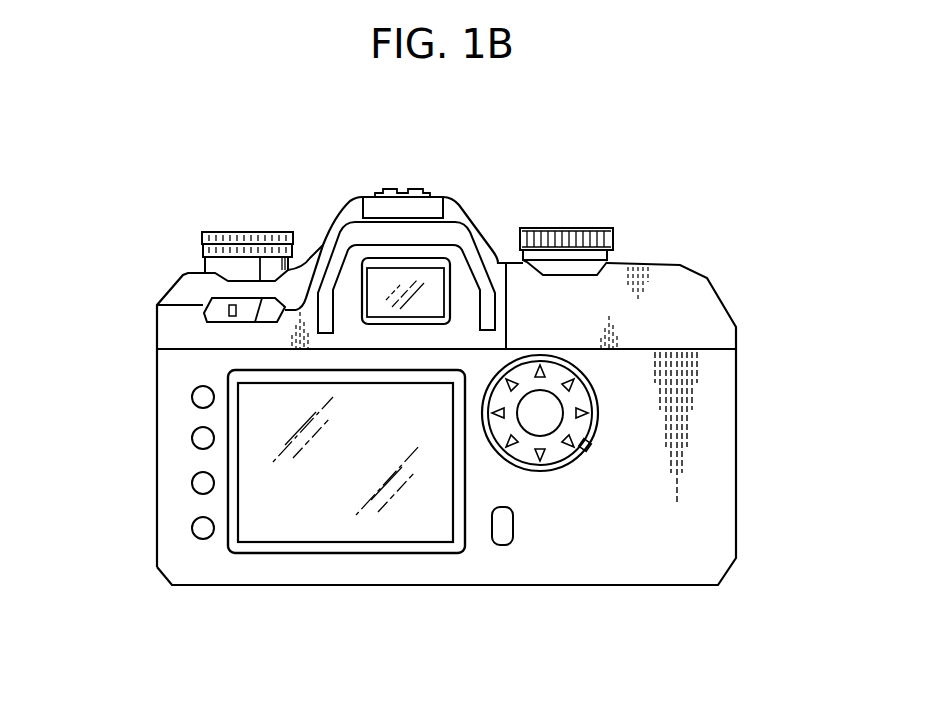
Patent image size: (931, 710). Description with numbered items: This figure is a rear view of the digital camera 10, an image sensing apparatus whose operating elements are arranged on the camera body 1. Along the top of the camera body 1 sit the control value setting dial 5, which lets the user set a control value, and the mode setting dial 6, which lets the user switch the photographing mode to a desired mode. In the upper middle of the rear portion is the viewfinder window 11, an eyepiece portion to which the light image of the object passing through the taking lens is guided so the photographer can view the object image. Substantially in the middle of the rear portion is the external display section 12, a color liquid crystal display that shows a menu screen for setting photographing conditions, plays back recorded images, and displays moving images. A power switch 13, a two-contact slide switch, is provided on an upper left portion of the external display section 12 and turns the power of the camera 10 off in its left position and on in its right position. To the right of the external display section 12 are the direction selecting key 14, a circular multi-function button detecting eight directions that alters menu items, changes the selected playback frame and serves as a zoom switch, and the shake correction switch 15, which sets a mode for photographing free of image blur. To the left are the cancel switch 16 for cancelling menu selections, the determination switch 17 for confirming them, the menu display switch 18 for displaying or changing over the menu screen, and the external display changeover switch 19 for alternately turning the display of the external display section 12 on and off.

The camera body 1 is at (719, 397).
The control value setting dial 5 is at (248, 231).
The mode setting dial 6 is at (568, 228).
The digital camera 10 is at (457, 178).
The viewfinder window 11 is at (382, 278).
The external display section 12 is at (341, 518).
The power switch 13 is at (203, 313).
The direction selecting key 14 is at (533, 470).
The shake correction switch 15 is at (502, 537).
The cancel switch 16 is at (192, 397).
The determination switch 17 is at (192, 438).
The menu display switch 18 is at (192, 483).
The external display changeover switch 19 is at (192, 528).